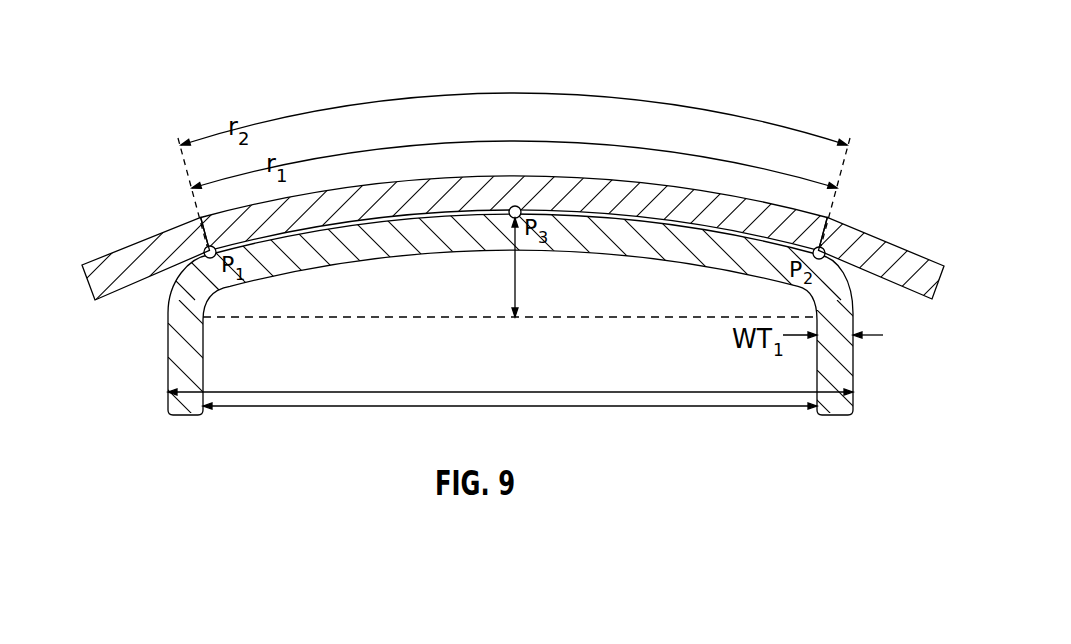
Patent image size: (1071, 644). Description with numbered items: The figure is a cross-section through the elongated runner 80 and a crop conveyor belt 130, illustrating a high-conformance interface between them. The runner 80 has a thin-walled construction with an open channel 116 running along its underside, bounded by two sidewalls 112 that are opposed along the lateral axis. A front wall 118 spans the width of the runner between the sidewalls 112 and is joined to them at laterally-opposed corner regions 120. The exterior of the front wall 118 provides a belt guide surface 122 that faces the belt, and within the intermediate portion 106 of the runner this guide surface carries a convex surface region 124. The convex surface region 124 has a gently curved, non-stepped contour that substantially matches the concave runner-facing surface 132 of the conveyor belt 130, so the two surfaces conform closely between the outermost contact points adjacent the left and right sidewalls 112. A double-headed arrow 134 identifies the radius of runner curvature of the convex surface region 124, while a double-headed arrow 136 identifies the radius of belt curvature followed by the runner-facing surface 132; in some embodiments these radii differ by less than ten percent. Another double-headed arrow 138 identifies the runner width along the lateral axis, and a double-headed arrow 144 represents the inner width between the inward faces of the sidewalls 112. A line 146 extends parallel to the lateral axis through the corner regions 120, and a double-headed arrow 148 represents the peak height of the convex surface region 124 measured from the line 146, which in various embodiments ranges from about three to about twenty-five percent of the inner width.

The elongated runner 80 is at (488, 309).
The intermediate portion 106 is at (265, 262).
The sidewalls 112 is at (190, 353).
The open channel 116 is at (422, 363).
The front wall 118 is at (393, 242).
The corner regions 120 is at (192, 279).
The belt guide surface 122 is at (425, 212).
The convex surface region 124 is at (608, 210).
The conveyor belt 130 is at (117, 249).
The runner-facing surface 132 is at (530, 209).
The radius of runner curvature arrow 134 is at (735, 161).
The radius of belt curvature arrow 136 is at (786, 121).
The runner width arrow 138 is at (578, 390).
The inner width arrow 144 is at (605, 407).
The line 146 is at (597, 320).
The peak height arrow 148 is at (518, 270).